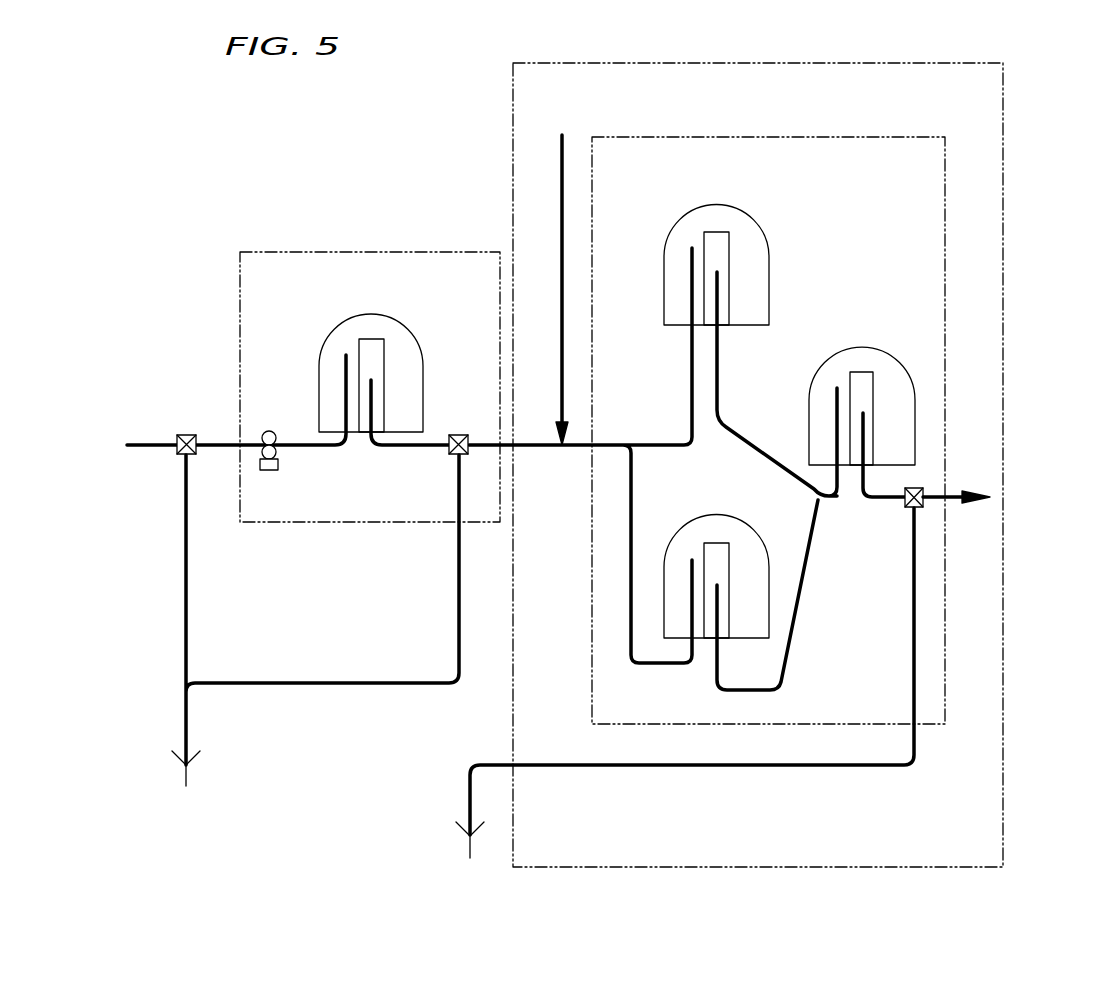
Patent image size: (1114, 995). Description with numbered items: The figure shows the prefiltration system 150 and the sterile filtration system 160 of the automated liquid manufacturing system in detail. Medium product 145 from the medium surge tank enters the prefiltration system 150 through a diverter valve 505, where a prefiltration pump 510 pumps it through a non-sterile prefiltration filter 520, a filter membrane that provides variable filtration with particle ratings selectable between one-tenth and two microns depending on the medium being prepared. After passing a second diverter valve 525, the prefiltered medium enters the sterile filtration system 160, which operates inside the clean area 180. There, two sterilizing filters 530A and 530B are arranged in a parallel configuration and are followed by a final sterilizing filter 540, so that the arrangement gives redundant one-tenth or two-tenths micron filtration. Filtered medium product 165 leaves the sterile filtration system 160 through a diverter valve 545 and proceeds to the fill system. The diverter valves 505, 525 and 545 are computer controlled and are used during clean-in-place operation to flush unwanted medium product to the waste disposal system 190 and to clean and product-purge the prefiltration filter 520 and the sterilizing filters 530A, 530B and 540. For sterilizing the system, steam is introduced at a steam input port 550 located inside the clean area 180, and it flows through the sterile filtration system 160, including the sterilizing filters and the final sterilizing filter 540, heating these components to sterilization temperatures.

The medium product 145 is at (142, 443).
The prefiltration system 150 is at (302, 250).
The sterile filtration system 160 is at (714, 137).
The filtered medium product 165 is at (957, 497).
The clean area 180 is at (907, 63).
The waste disposal system 190 is at (462, 830).
The diverter valve 505 is at (183, 437).
The prefiltration pump 510 is at (267, 472).
The prefiltration filter 520 is at (423, 366).
The diverter valve 525 is at (457, 457).
The sterilizing filter 530A is at (769, 605).
The sterilizing filter 530B is at (664, 280).
The final sterilizing filter 540 is at (838, 348).
The diverter valve 545 is at (905, 499).
The steam input port 550 is at (560, 238).